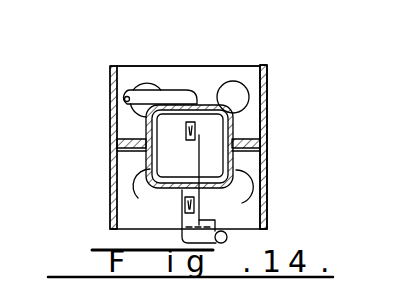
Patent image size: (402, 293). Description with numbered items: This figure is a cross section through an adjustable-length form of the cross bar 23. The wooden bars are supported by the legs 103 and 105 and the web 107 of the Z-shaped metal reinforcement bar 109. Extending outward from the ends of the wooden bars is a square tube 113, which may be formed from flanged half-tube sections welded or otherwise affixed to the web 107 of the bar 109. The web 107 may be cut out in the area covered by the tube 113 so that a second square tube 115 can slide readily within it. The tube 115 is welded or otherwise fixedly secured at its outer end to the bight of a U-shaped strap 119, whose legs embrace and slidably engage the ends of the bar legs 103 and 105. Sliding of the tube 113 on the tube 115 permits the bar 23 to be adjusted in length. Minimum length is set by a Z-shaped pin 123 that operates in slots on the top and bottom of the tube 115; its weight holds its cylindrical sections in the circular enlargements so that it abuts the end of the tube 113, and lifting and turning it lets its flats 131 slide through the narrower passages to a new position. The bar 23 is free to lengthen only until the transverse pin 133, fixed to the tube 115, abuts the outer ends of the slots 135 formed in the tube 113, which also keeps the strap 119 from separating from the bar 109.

The cross bar 23 is at (108, 108).
The leg 103 is at (268, 100).
The leg 105 is at (122, 187).
The web 107 is at (268, 129).
The Z-shaped metal reinforcement bar 109 is at (270, 77).
The square tube 113 is at (233, 108).
The second square tube 115 is at (218, 108).
The U-shaped strap 119 is at (110, 79).
The Z-shaped pin 123 is at (148, 96).
The flats 131 is at (194, 204).
The transverse pin 133 is at (179, 190).
The slots 135 is at (208, 105).